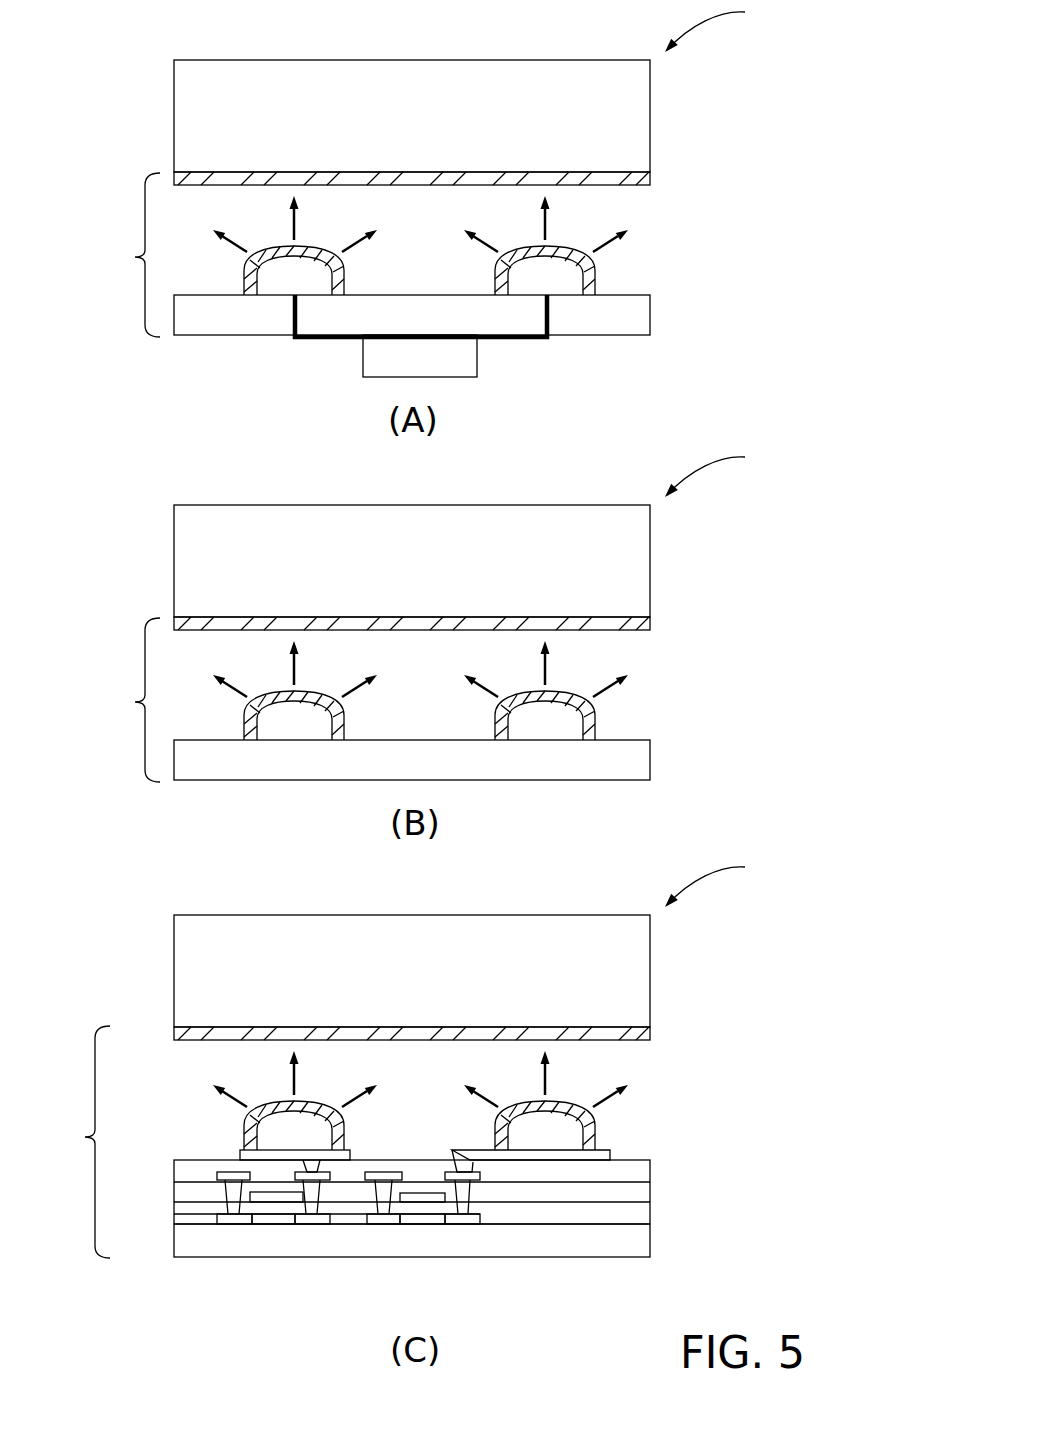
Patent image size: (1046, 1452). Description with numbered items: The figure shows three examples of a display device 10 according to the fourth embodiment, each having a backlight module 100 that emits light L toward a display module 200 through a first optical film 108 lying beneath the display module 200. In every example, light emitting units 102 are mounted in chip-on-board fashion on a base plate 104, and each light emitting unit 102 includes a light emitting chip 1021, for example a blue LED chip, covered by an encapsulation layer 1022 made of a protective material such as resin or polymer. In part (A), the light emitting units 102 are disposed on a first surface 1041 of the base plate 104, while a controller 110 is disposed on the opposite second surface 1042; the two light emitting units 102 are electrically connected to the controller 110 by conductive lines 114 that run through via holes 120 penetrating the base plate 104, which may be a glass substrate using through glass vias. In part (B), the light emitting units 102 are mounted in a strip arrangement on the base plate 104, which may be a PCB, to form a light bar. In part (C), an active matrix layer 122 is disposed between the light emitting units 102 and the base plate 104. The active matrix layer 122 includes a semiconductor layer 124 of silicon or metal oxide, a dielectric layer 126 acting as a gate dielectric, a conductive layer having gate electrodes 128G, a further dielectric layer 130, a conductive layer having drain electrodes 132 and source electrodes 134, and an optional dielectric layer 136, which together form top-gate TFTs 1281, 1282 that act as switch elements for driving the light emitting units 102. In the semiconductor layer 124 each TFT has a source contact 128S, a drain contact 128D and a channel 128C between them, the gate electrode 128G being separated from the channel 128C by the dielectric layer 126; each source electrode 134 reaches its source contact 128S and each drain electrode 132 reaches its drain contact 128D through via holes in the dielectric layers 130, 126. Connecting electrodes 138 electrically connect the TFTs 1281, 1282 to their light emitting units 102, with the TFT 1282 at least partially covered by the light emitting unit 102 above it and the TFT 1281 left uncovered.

The display device 10 is at (718, 453).
The backlight module 100 is at (135, 257).
The light emitting unit 102 is at (382, 698).
The light emitting chip 1021 is at (283, 290).
The encapsulation layer 1022 is at (250, 296).
The base plate 104 is at (636, 312).
The first surface 1041 is at (620, 295).
The second surface 1042 is at (625, 336).
The first optical film 108 is at (652, 180).
The controller 110 is at (440, 366).
The conductive line 114 is at (511, 340).
The via hole 120 is at (550, 315).
The active matrix layer 122 is at (650, 1160).
The semiconductor layer 124 is at (215, 1215).
The dielectric layer 126 is at (634, 1210).
The gate electrode 128G is at (423, 1193).
The source contact 128S is at (386, 1224).
The channel 128C is at (421, 1224).
The drain contact 128D is at (462, 1224).
The TFT 1281 is at (448, 1220).
The TFT 1282 is at (267, 1246).
The dielectric layer 130 is at (192, 1193).
The drain electrode 132 is at (470, 1180).
The source electrode 134 is at (372, 1180).
The dielectric layer 136 is at (634, 1174).
The connecting electrode 138 is at (612, 1150).
The display module 200 is at (446, 127).
The light L is at (297, 221).